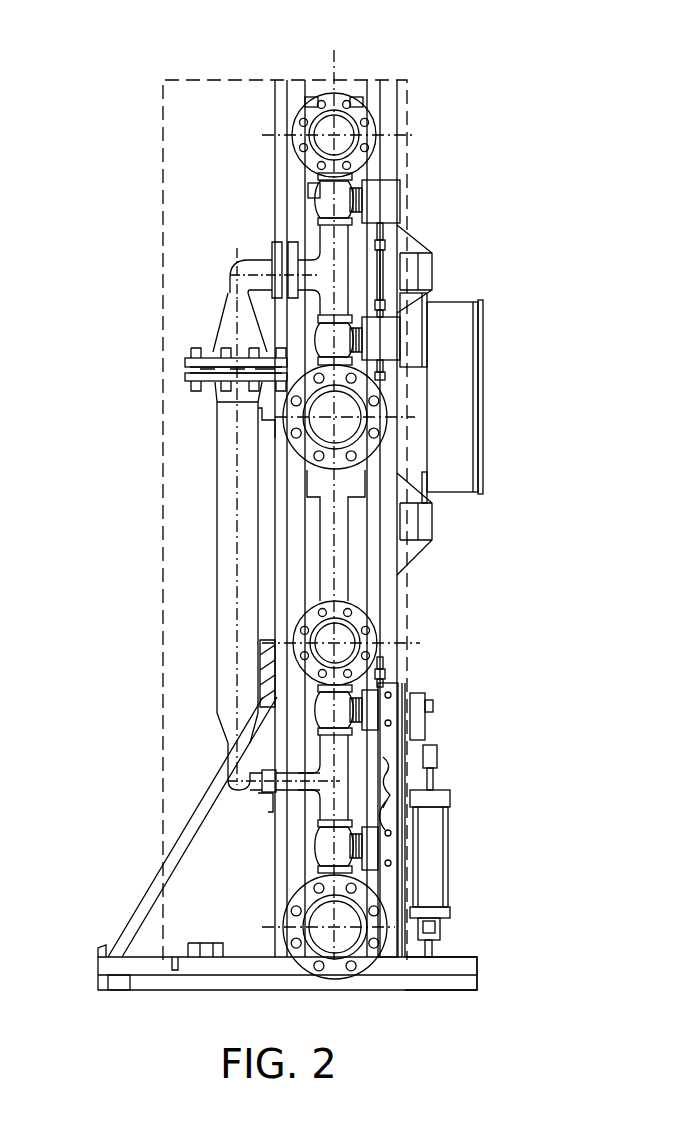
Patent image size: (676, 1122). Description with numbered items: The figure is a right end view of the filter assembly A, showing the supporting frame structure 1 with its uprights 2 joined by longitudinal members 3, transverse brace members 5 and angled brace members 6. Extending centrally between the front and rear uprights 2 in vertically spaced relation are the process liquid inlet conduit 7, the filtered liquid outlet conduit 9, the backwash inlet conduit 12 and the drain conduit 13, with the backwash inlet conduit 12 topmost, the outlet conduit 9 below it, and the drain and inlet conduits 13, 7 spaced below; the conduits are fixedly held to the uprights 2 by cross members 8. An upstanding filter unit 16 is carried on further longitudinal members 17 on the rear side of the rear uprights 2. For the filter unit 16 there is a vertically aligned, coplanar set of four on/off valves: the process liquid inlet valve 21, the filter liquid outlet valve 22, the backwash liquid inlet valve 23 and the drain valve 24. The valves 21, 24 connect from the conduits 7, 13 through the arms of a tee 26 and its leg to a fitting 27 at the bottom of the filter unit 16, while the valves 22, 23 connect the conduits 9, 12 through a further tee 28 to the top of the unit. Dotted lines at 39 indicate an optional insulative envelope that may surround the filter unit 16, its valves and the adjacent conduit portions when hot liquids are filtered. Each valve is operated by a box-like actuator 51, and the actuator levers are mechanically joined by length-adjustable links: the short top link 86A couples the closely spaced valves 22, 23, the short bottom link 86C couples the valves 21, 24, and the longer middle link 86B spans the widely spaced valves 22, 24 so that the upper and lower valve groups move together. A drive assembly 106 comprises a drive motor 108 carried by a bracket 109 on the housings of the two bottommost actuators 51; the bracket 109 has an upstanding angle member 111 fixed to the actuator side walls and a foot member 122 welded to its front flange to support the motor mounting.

The supporting frame structure 1 is at (276, 68).
The filter assembly A is at (94, 134).
The uprights 2 is at (283, 100).
The longitudinal members 3 is at (432, 266).
The transverse brace members 5 is at (148, 987).
The angled brace members 6 is at (150, 884).
The process liquid inlet conduit 7 is at (318, 952).
The cross members 8 is at (318, 478).
The filtered liquid outlet conduit 9 is at (366, 424).
The backwash inlet conduit 12 is at (356, 131).
The drain conduit 13 is at (357, 641).
The filter units 16 is at (262, 416).
The further longitudinal members 17 is at (272, 805).
The process liquid inlet valve 21 is at (328, 848).
The filter liquid outlet valve 22 is at (328, 342).
The backwash liquid inlet valve 23 is at (328, 201).
The drain valve 24 is at (328, 714).
The tee 26 is at (330, 796).
The fitting 27 is at (232, 771).
The further tee 28 is at (328, 272).
The insulative envelope 39 is at (161, 646).
The actuator 51 is at (403, 183).
The top link 86A is at (387, 254).
The middle link 86B is at (392, 592).
The bottom link 86C is at (388, 818).
The drive assembly 106 is at (456, 770).
The drive motor 108 is at (453, 912).
The bracket 109 is at (399, 940).
The upstanding angle member 111 is at (402, 736).
The foot member 122 is at (427, 962).